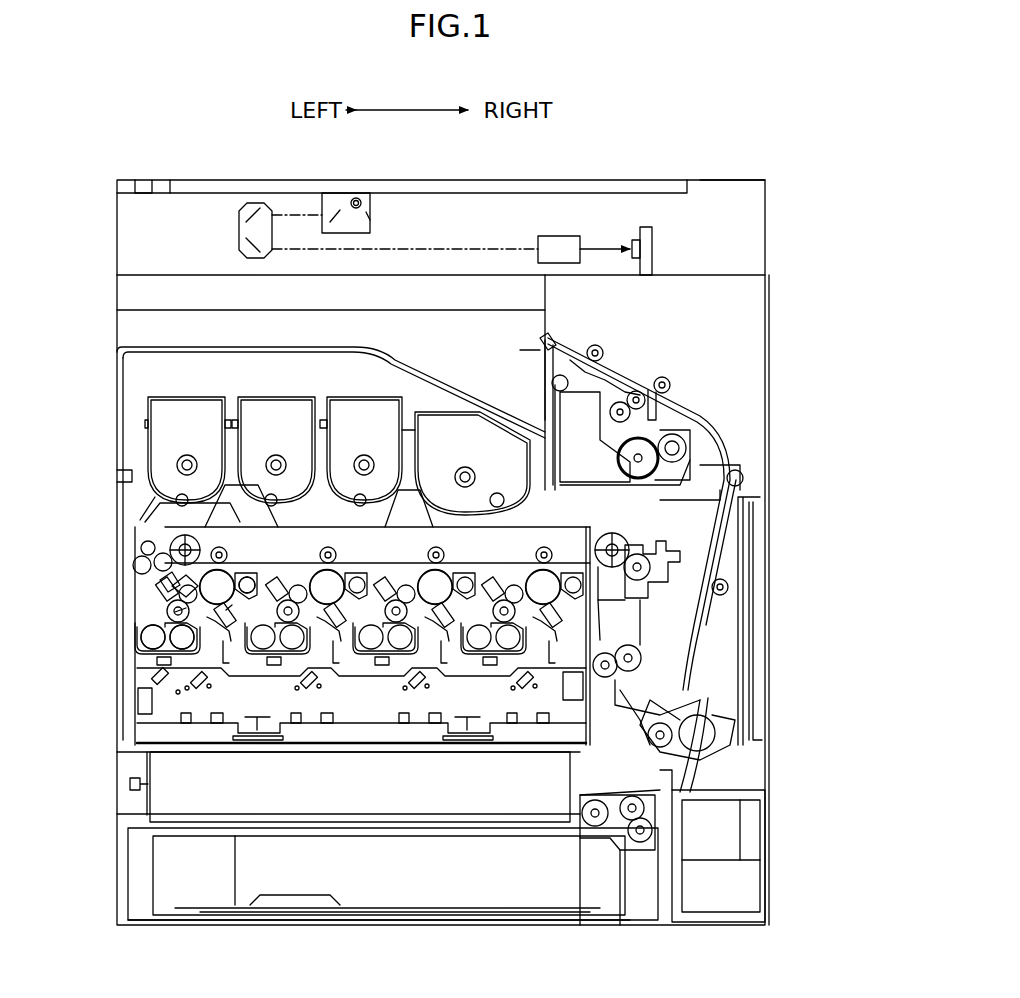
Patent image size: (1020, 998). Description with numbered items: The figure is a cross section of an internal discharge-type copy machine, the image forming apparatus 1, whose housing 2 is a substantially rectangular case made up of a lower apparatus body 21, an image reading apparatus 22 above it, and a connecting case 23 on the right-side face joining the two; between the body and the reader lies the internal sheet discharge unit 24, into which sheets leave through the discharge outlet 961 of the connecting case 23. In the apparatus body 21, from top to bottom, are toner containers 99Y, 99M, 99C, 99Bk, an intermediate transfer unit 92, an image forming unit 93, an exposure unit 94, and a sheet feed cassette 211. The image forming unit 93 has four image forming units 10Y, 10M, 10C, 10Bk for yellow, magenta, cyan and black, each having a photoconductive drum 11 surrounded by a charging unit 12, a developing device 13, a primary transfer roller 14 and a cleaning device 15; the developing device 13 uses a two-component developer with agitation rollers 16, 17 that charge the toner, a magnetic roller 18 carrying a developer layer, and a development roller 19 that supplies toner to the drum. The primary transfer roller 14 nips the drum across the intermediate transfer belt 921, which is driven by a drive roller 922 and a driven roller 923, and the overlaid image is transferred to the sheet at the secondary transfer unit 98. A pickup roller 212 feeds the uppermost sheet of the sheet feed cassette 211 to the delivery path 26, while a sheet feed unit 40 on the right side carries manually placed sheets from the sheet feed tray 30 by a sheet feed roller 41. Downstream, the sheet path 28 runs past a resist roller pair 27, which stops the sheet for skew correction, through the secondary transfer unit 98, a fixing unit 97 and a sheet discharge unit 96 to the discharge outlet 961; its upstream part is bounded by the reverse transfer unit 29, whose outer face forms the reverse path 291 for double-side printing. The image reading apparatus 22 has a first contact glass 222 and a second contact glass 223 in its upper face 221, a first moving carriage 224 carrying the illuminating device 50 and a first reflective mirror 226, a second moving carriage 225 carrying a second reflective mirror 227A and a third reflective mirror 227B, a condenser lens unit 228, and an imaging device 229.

The image forming apparatus 1 is at (690, 127).
The housing 2 is at (117, 430).
The photoconductive drum 11 is at (221, 527).
The charging unit 12 is at (232, 625).
The developing device 13 is at (190, 632).
The primary transfer roller 14 is at (205, 548).
The cleaning device 15 is at (242, 560).
The agitation roller 16 is at (180, 660).
The agitation roller 17 is at (165, 640).
The magnetic roller 18 is at (160, 632).
The development roller 19 is at (160, 590).
The apparatus body 21 is at (125, 775).
The image reading apparatus 22 is at (768, 250).
The connecting case 23 is at (768, 358).
The internal sheet discharge unit 24 is at (522, 297).
The delivery path 26 is at (690, 796).
The resist roller pair 27 is at (627, 700).
The sheet path 28 is at (645, 666).
The reverse transfer unit 29 is at (692, 557).
The sheet feed tray 30 is at (755, 577).
The sheet feed unit 40 is at (770, 772).
The sheet feed roller 41 is at (712, 732).
The illuminating device 50 is at (373, 211).
The intermediate transfer unit 92 is at (165, 530).
The image forming unit 93 is at (110, 685).
The exposure unit 94 is at (140, 705).
The sheet discharge unit 96 is at (640, 395).
The fixing unit 97 is at (690, 420).
The secondary transfer unit 98 is at (637, 534).
The toner container 99Y is at (180, 397).
The toner container 99M is at (270, 397).
The toner container 99C is at (340, 397).
The toner container 99Bk is at (430, 410).
The image forming unit 10Y is at (175, 610).
The image forming unit 10M is at (292, 580).
The image forming unit 10C is at (398, 580).
The image forming unit 10Bk is at (508, 580).
The sheet feed cassette 211 is at (135, 892).
The pickup roller 212 is at (595, 828).
The upper face 221 is at (740, 182).
The first contact glass 222 is at (143, 181).
The second contact glass 223 is at (190, 181).
The first moving carriage 224 is at (372, 223).
The second moving carriage 225 is at (252, 203).
The first reflective mirror 226 is at (348, 234).
The second reflective mirror 227A is at (240, 218).
The third reflective mirror 227B is at (240, 252).
The condenser lens unit 228 is at (556, 236).
The imaging device 229 is at (642, 228).
The reverse path 291 is at (722, 578).
The intermediate transfer belt 921 is at (326, 548).
The drive roller 922 is at (622, 565).
The driven roller 923 is at (170, 552).
The discharge outlet 961 is at (548, 338).